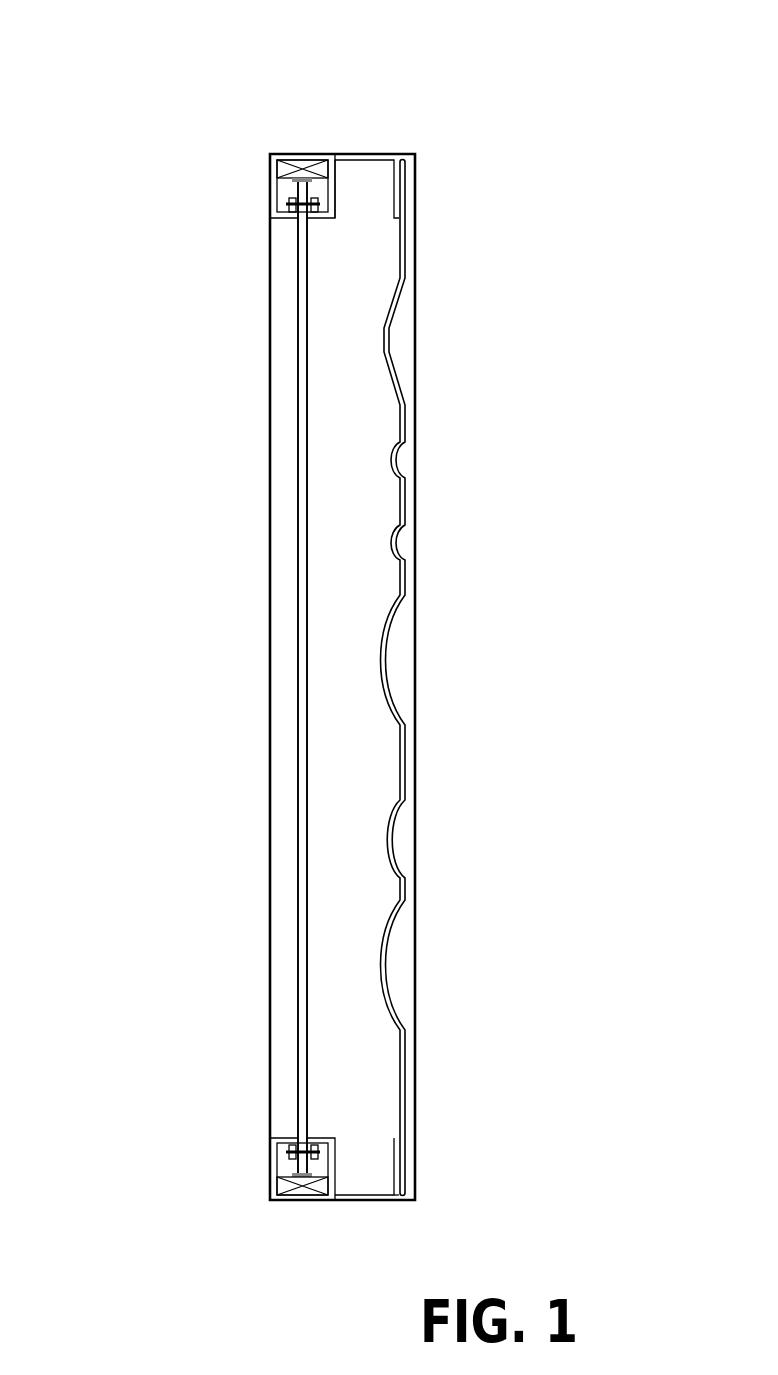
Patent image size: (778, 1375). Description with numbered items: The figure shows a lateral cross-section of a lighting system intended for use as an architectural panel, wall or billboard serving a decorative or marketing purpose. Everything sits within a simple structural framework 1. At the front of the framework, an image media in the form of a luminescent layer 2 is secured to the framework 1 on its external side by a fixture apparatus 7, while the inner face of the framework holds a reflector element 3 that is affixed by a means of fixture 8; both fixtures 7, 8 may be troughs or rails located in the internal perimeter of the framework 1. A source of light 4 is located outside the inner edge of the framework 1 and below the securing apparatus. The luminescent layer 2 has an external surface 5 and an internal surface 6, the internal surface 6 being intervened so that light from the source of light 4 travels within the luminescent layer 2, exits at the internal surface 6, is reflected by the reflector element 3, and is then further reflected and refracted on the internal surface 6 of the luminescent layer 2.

The structural framework 1 is at (294, 155).
The luminescent layer 2 is at (302, 502).
The reflector element 3 is at (398, 818).
The source of light 4 is at (305, 1177).
The external surface 5 is at (270, 793).
The internal surface 6 is at (312, 753).
The fixture apparatus 7 is at (283, 1177).
The means of fixture 8 is at (412, 1175).